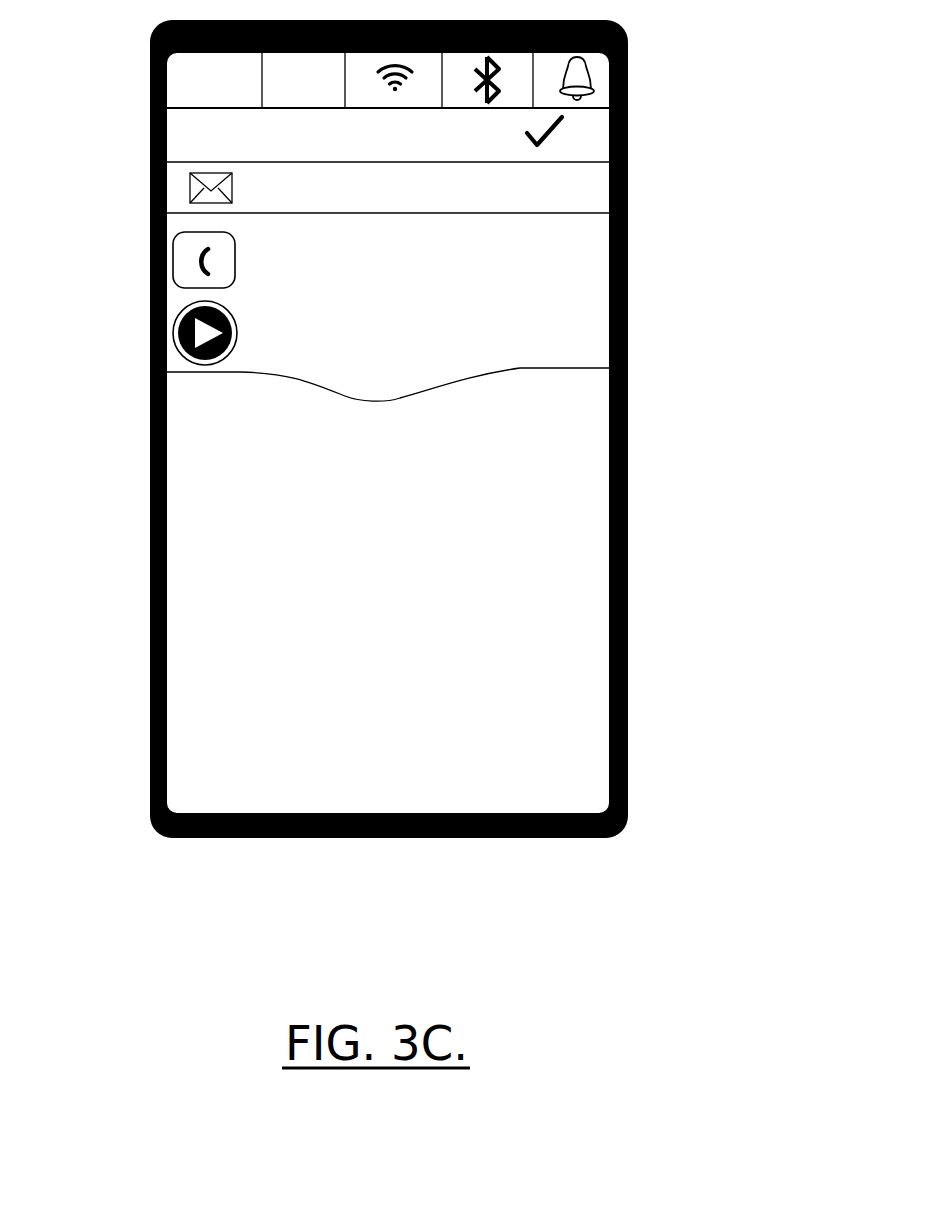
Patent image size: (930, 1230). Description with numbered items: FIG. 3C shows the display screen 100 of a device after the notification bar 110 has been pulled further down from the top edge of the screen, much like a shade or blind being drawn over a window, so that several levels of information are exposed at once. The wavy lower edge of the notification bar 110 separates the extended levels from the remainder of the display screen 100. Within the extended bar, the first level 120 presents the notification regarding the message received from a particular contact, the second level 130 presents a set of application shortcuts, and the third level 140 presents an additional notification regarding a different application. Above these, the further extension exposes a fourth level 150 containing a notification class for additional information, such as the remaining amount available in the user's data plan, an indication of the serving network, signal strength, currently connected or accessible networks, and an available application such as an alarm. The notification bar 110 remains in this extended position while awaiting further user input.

The display screen 100 is at (333, 429).
The notification bar 110 is at (490, 444).
The first level 120 is at (452, 202).
The second level 130 is at (578, 297).
The third level 140 is at (452, 143).
The fourth level 150 is at (452, 81).